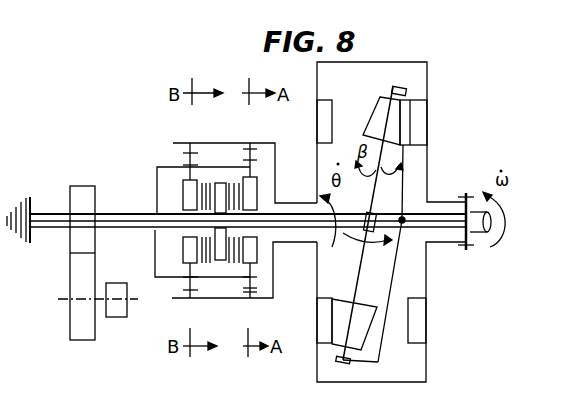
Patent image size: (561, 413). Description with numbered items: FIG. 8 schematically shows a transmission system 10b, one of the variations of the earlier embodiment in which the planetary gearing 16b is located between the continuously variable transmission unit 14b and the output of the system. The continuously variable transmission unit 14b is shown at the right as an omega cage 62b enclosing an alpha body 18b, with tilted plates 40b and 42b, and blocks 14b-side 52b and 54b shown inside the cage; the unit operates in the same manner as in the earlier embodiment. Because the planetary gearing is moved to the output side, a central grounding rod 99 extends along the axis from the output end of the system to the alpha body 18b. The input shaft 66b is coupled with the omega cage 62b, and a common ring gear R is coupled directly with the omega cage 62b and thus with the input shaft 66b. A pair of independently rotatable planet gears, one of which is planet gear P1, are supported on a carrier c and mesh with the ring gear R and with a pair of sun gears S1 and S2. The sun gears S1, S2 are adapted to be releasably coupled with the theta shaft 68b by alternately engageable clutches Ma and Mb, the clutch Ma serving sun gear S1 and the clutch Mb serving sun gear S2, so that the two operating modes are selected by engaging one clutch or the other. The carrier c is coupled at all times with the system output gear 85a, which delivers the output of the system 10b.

The transmission system 10b is at (142, 136).
The system output gear 85a is at (79, 170).
The central grounding rod 99 is at (44, 228).
The carrier c is at (157, 168).
The planetary gearing 16b is at (222, 128).
The ring gear R is at (230, 143).
The planet gear P1 is at (257, 168).
The theta shaft 68b is at (295, 210).
The sun gear S2 is at (183, 248).
The sun gear S1 is at (257, 253).
The clutch Mb is at (205, 263).
The clutch Ma is at (237, 263).
The omega cage 62b is at (428, 63).
The swash plate 40b is at (372, 108).
The continuously variable transmission unit 14b is at (428, 130).
The input shaft 66b is at (443, 202).
The alpha body 18b is at (393, 270).
The block 54b is at (423, 333).
The lower plate 42b is at (365, 333).
The block 52b is at (317, 333).